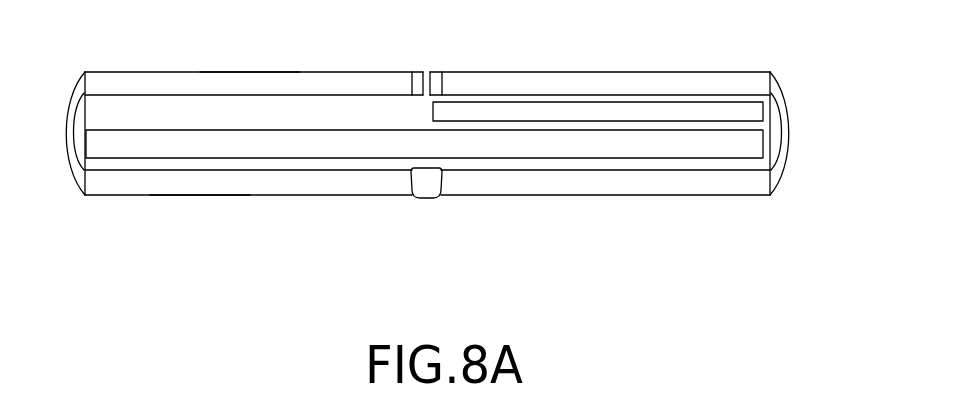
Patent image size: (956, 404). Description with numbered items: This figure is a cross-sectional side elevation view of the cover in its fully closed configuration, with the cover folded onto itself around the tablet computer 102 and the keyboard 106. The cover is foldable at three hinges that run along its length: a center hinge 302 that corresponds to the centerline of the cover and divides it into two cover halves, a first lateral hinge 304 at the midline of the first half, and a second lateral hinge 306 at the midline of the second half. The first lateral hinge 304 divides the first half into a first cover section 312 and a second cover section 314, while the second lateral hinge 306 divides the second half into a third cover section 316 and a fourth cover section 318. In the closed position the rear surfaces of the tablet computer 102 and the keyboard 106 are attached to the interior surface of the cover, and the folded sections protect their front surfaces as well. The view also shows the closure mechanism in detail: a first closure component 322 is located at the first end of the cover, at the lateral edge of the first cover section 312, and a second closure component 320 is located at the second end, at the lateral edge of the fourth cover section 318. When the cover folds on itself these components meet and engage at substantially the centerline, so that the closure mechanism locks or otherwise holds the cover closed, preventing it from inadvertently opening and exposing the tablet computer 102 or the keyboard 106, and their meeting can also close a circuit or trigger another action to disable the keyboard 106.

The tablet computer 102 is at (703, 148).
The keyboard 106 is at (695, 107).
The center hinge 302 is at (426, 199).
The first lateral hinge 304 is at (792, 120).
The second lateral hinge 306 is at (75, 82).
The first cover section 312 is at (589, 77).
The second cover section 314 is at (589, 187).
The third cover section 316 is at (179, 188).
The fourth cover section 318 is at (218, 76).
The second closure component 320 is at (418, 70).
The first closure component 322 is at (438, 70).